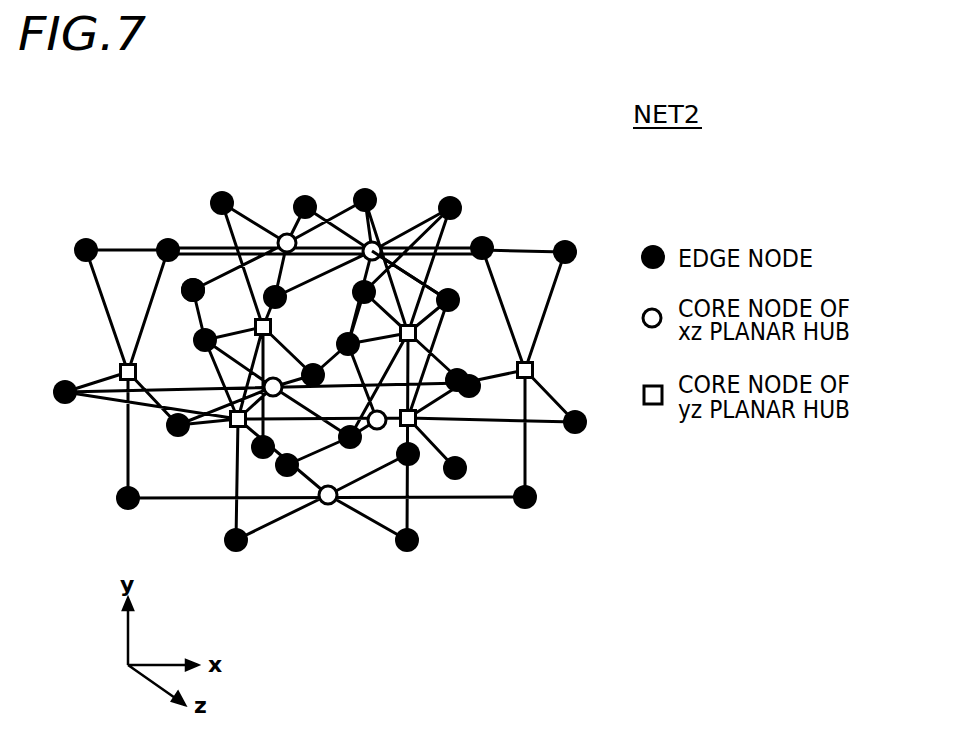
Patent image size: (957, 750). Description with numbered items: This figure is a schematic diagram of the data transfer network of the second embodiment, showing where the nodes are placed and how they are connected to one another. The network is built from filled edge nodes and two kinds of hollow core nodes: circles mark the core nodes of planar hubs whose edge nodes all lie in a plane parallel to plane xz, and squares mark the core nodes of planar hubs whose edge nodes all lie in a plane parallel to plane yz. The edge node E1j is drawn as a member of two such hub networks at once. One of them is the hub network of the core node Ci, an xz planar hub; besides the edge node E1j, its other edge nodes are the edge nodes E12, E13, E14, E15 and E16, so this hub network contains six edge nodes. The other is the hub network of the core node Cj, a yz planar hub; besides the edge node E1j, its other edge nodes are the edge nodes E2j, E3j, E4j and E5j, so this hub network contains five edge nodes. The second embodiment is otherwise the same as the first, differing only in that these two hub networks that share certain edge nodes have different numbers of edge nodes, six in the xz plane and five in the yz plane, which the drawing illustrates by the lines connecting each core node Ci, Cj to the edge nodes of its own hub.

The edge node E1j is at (86, 240).
The edge node E2j is at (168, 240).
The edge node E3j is at (178, 430).
The edge node E4j is at (128, 490).
The edge node E5j is at (65, 380).
The edge node E12 is at (222, 192).
The edge node E13 is at (365, 190).
The edge node E14 is at (482, 238).
The edge node E15 is at (432, 278).
The edge node E16 is at (193, 280).
The core node Ci is at (287, 233).
The core node Cj is at (124, 382).